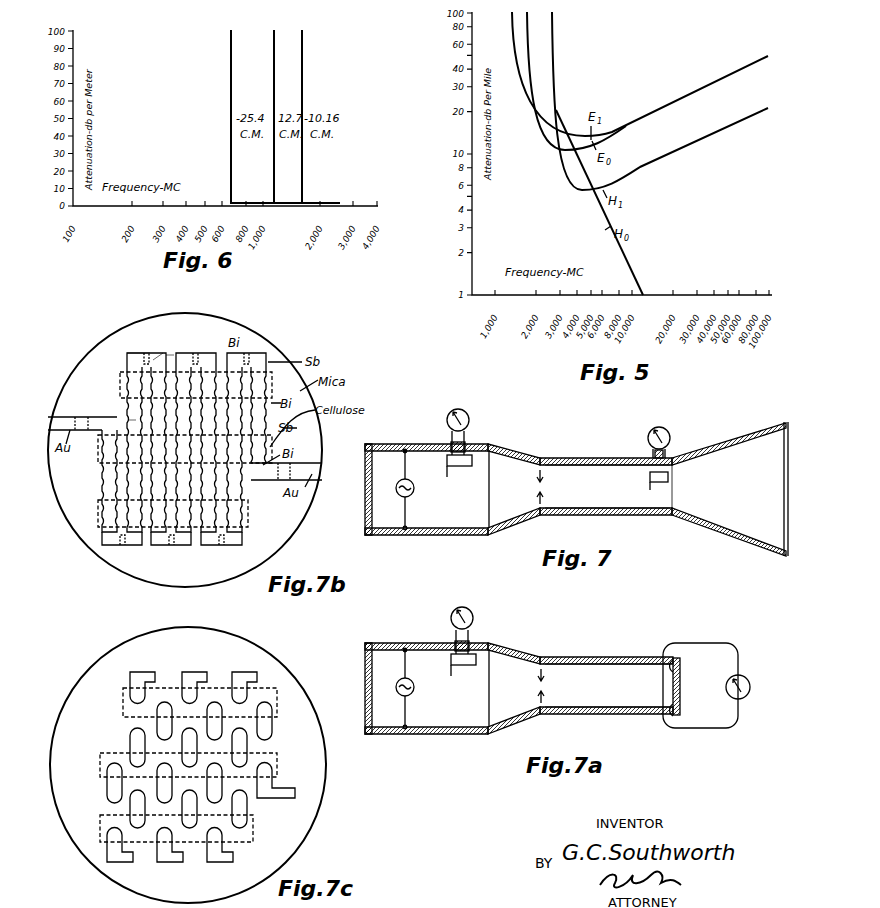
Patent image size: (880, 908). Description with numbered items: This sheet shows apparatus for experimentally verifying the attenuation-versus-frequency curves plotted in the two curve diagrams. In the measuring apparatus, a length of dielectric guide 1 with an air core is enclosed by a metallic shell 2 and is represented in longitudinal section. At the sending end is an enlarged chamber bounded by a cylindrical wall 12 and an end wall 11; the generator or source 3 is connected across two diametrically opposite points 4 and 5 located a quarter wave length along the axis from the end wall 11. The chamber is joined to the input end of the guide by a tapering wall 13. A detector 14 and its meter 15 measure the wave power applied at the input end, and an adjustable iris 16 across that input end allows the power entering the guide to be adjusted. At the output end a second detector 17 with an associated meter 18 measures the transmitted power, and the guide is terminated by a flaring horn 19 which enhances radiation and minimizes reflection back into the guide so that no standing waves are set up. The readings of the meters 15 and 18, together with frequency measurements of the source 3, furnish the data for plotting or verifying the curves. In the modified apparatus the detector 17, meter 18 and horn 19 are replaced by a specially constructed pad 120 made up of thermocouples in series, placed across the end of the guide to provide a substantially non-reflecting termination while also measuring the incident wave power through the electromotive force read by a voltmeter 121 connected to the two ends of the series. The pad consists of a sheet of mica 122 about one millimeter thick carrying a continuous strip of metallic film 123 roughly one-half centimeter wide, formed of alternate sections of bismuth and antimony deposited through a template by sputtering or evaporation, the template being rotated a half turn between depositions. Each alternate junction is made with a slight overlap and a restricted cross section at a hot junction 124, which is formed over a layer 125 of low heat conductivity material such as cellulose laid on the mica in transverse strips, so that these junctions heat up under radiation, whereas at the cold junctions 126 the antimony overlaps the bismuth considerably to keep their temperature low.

In FIG. 7, the dielectric guide 1 is at (606, 472).
In FIG. 7A, the dielectric guide 1 is at (607, 673).
In FIG. 7, the enclosing metallic shell 2 is at (583, 463).
In FIG. 7A, the enclosing metallic shell 2 is at (606, 677).
In FIG. 7, the source 3 is at (414, 490).
In FIG. 7A, the source 3 is at (414, 689).
In FIG. 7, the connection point 4 is at (404, 452).
In FIG. 7A, the connection point 4 is at (404, 651).
In FIG. 7, the connection point 5 is at (404, 526).
In FIG. 7A, the connection point 5 is at (404, 725).
In FIG. 7, the end wall 11 is at (366, 515).
In FIG. 7A, the end wall 11 is at (357, 688).
In FIG. 7, the cylindrical wall 12 is at (435, 530).
In FIG. 7, the tapering wall 13 is at (514, 456).
In FIG. 7A, the tapering wall 13 is at (514, 684).
In FIG. 7, the detector 14 is at (470, 462).
In FIG. 7A, the detector 14 is at (474, 647).
In FIG. 7, the meter 15 is at (456, 410).
In FIG. 7A, the meter 15 is at (467, 609).
In FIG. 7, the adjustable iris 16 is at (540, 492).
In FIG. 7A, the adjustable iris 16 is at (535, 707).
In FIG. 7, the detector 17 is at (668, 476).
In FIG. 7, the meter 18 is at (665, 427).
In FIG. 7, the flaring horn 19 is at (727, 540).
In FIG. 7A, the pad 120 is at (683, 660).
In FIG. 7B, the pad 120 is at (185, 450).
In FIG. 7A, the voltmeter 121 is at (751, 687).
In FIG. 7B, the sheet of mica 122 is at (226, 326).
In FIG. 7C, the sheet of mica 122 is at (268, 724).
In FIG. 7B, the continuous strip of metallic film 123 is at (165, 355).
In FIG. 7B, the hot junction 124 is at (140, 350).
In FIG. 7B, the layer of low heat conductivity material 125 is at (120, 378).
In FIG. 7C, the layer of low heat conductivity material 125 is at (278, 696).
In FIG. 7B, the cold junction 126 is at (135, 418).